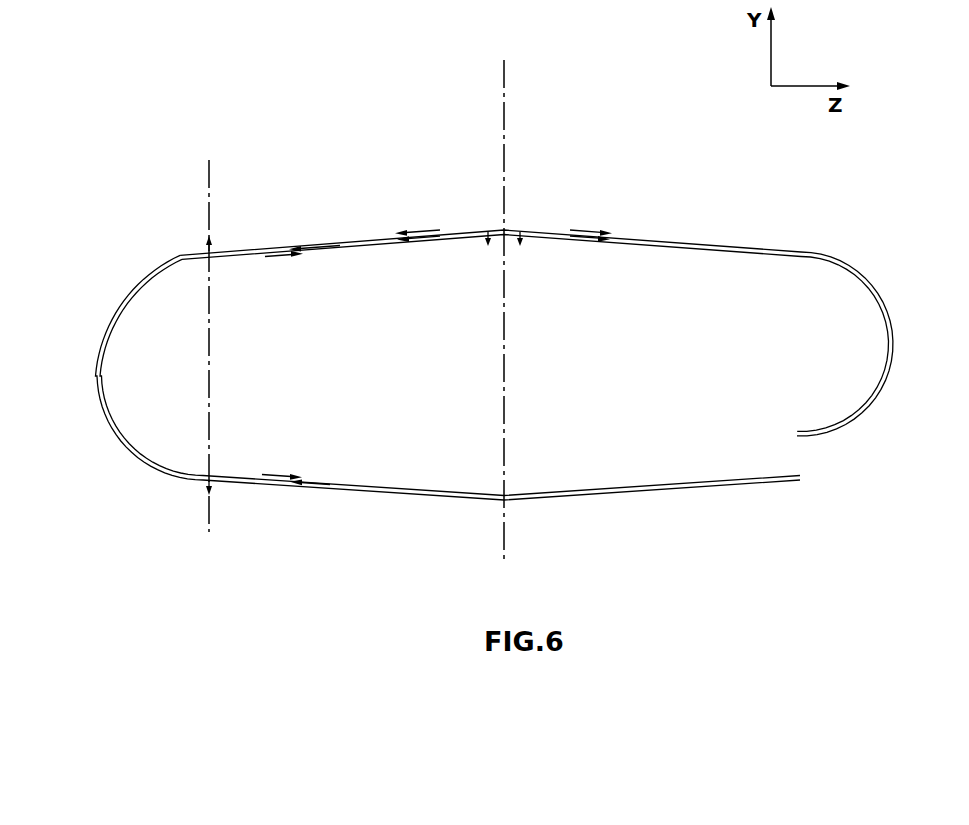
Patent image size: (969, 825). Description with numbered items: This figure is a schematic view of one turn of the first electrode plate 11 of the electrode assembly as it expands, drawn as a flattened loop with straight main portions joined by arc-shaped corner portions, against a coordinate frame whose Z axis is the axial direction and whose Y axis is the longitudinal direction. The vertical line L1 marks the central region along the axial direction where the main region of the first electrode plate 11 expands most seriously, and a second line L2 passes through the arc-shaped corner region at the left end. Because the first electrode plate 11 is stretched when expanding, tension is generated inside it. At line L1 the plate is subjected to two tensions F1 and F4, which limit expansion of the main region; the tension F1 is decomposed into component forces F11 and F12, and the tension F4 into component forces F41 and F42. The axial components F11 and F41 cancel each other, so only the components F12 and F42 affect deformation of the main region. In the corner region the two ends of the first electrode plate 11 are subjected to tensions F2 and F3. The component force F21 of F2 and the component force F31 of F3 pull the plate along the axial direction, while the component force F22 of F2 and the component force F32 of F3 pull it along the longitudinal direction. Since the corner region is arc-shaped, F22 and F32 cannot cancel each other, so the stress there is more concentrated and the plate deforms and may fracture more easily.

The first electrode plate 11 is at (112, 144).
The line L1 is at (508, 298).
The line L2 is at (213, 331).
The tension F1 is at (418, 254).
The component force F11 is at (417, 221).
The component force F12 is at (492, 253).
The tension F2 is at (312, 235).
The component force F21 is at (293, 267).
The component force F22 is at (227, 232).
The tension F3 is at (303, 498).
The component force F31 is at (290, 460).
The component force F32 is at (227, 495).
The tension F4 is at (594, 255).
The component force F41 is at (602, 221).
The component force F42 is at (535, 253).